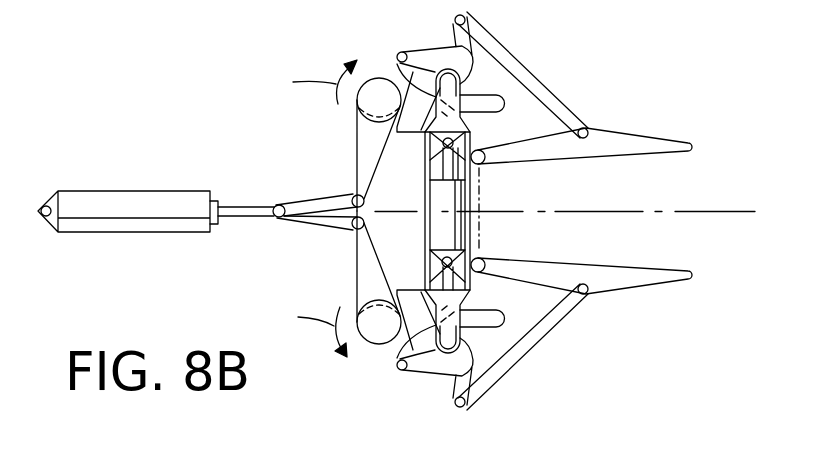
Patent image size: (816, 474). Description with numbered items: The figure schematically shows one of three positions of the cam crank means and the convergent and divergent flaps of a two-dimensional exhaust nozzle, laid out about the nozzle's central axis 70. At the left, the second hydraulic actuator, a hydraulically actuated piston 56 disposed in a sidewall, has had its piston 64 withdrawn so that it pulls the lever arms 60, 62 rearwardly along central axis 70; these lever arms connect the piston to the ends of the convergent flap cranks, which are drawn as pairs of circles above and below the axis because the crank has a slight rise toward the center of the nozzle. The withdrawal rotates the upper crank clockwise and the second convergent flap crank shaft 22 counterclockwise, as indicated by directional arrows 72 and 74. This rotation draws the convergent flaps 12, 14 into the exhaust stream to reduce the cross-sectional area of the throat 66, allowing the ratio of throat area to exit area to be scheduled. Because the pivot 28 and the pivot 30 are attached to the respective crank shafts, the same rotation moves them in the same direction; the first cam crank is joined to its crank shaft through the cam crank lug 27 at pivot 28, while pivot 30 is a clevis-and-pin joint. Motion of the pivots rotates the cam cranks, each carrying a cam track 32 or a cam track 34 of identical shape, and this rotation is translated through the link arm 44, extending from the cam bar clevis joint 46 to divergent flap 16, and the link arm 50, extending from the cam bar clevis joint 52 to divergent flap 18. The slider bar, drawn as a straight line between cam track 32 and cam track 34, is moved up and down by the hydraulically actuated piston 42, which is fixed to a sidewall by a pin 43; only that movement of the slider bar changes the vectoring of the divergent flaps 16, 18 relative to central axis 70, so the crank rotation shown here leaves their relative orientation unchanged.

The convergent flap 12 is at (414, 137).
The convergent flap 14 is at (414, 285).
The divergent flap 16 is at (662, 142).
The divergent flap 18 is at (677, 280).
The second convergent flap crank 22 is at (377, 330).
The cam crank lug 27 is at (455, 37).
The pivot 28 is at (397, 55).
The pivot 30 is at (415, 378).
The cam track 32 is at (492, 100).
The cam track 34 is at (503, 322).
The hydraulically actuated piston 42 is at (452, 231).
The pin 43 is at (477, 292).
The link arm 44 is at (567, 107).
The cam bar clevis joint 46 is at (472, 8).
The link arm 50 is at (572, 311).
The cam bar clevis joint 52 is at (459, 410).
The hydraulically actuated piston 56 is at (158, 188).
The lever arm 60 is at (346, 229).
The lever arm 62 is at (345, 196).
The piston 64 is at (261, 202).
The throat 66 is at (483, 185).
The central axis 70 is at (628, 210).
The directional arrow 72 is at (311, 82).
The directional arrow 74 is at (310, 330).